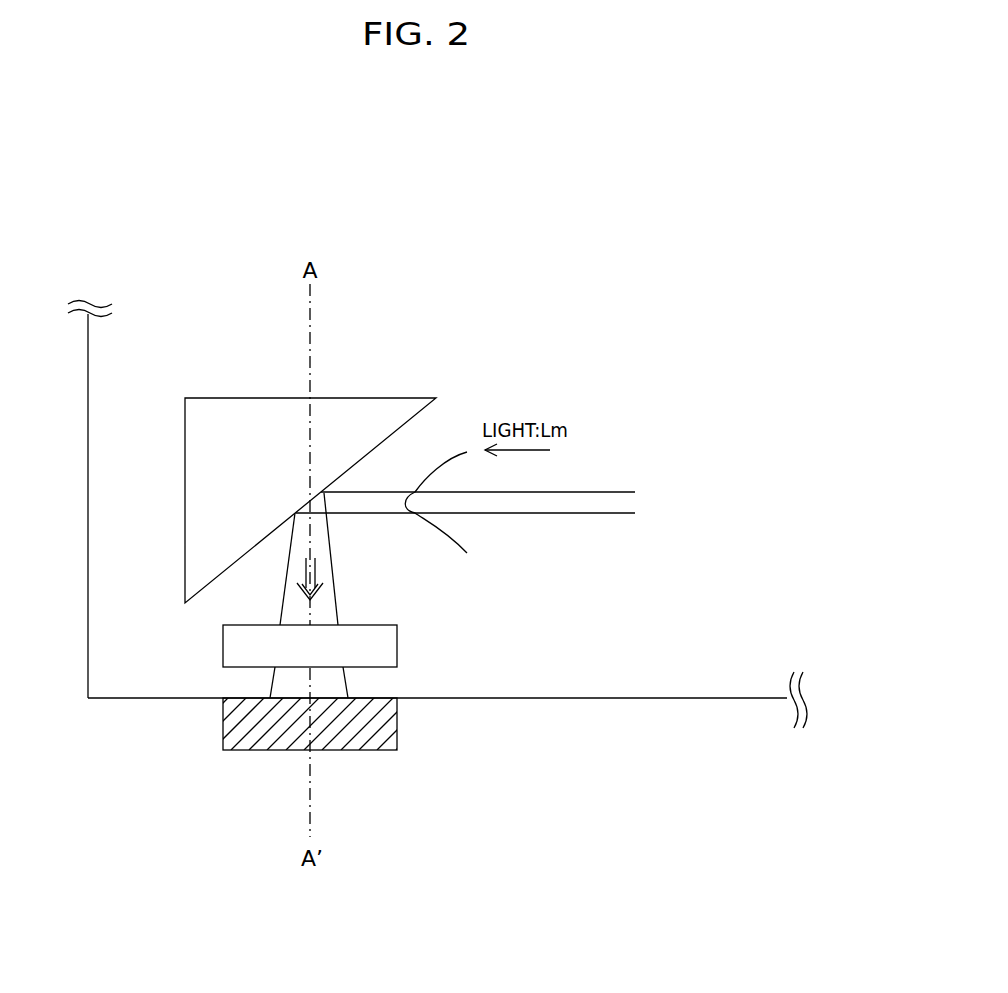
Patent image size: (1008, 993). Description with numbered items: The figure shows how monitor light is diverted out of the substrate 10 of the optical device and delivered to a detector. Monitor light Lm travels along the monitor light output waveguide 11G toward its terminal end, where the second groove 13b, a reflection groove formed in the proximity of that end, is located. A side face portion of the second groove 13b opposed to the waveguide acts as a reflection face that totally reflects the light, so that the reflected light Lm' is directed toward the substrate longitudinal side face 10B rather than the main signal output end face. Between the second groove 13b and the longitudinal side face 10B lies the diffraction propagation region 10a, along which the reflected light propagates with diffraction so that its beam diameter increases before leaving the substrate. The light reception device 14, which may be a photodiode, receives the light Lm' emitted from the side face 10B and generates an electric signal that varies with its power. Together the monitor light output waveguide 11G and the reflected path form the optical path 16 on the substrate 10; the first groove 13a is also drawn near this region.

The substrate 10 is at (160, 670).
The substrate longitudinal side face 10B is at (610, 698).
The diffraction propagation region 10a is at (335, 600).
The monitor light output waveguide 11G is at (608, 491).
The first groove 13a is at (397, 645).
The second groove 13b is at (408, 425).
The light reception device 14 is at (397, 722).
The optical path 16 is at (584, 522).